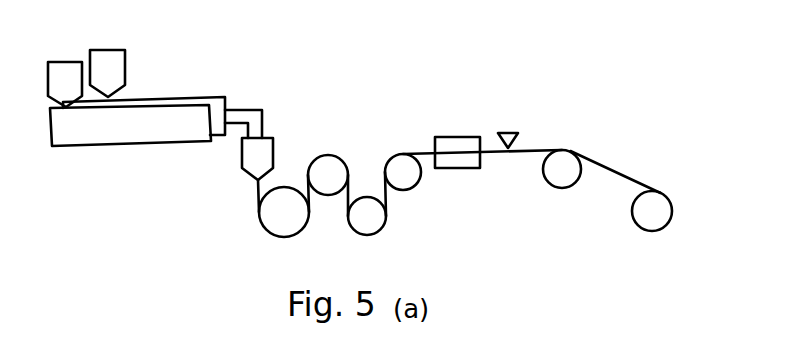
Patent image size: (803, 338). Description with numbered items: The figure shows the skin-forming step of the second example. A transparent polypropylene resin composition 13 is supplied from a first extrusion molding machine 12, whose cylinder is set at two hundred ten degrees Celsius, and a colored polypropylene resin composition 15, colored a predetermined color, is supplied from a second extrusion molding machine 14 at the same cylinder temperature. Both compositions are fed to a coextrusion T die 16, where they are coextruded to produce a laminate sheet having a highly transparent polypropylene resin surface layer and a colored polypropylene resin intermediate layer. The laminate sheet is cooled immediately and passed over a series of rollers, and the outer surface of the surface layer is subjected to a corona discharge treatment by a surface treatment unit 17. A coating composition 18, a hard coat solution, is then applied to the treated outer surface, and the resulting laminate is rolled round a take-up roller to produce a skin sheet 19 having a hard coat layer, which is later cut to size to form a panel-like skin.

The first extrusion molding machine 12 is at (177, 97).
The transparent polypropylene resin composition 13 is at (108, 58).
The second extrusion molding machine 14 is at (122, 135).
The colored polypropylene resin composition 15 is at (58, 61).
The coextrusion T die 16 is at (262, 148).
The surface treatment unit 17 is at (447, 145).
The coating composition 18 is at (508, 133).
The skin sheet 19 is at (615, 170).